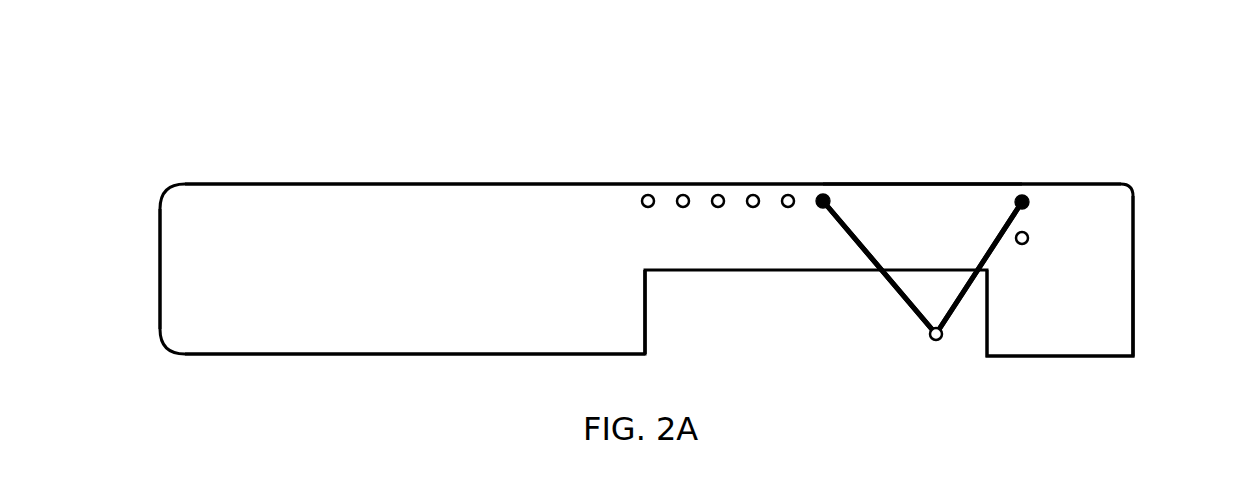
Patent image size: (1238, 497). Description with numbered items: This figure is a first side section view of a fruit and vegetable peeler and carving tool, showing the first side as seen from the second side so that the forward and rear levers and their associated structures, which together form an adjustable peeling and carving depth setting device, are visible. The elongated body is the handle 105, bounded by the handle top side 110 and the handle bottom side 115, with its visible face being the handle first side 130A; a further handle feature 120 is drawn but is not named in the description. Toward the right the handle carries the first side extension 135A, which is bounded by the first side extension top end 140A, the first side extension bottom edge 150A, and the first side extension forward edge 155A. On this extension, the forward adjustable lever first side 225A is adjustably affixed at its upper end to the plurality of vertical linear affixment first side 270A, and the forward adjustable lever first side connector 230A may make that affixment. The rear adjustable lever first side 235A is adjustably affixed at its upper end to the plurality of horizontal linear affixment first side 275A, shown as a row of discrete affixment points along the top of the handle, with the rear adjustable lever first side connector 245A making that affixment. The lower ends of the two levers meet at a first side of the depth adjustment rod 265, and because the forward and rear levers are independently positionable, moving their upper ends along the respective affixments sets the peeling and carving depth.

The handle 105 is at (646, 270).
The handle top side 110 is at (460, 184).
The handle bottom side 115 is at (463, 354).
The step 120 is at (647, 306).
The handle first side 130A is at (402, 281).
The first side extension 135A is at (922, 267).
The first side extension top end 140A is at (890, 183).
The first side extension bottom edge 150A is at (1097, 358).
The first side extension forward edge 155A is at (1136, 242).
The forward adjustable lever first side 225A is at (986, 242).
The forward adjustable lever first side connector 230A is at (1022, 192).
The rear adjustable lever first side 235A is at (888, 287).
The rear adjustable lever first side connector 245A is at (823, 194).
The depth adjustment rod 265 is at (937, 343).
The plurality of vertical linear affixment first side 270A is at (1106, 293).
The plurality of horizontal linear affixment first side 275A is at (685, 195).